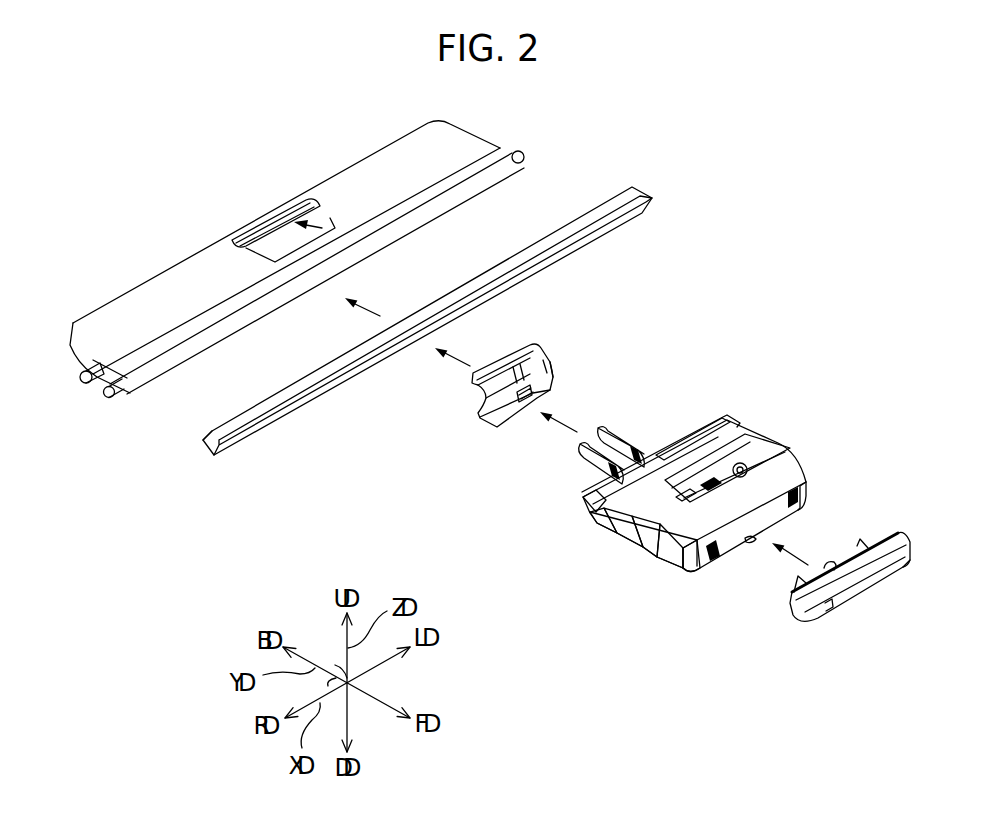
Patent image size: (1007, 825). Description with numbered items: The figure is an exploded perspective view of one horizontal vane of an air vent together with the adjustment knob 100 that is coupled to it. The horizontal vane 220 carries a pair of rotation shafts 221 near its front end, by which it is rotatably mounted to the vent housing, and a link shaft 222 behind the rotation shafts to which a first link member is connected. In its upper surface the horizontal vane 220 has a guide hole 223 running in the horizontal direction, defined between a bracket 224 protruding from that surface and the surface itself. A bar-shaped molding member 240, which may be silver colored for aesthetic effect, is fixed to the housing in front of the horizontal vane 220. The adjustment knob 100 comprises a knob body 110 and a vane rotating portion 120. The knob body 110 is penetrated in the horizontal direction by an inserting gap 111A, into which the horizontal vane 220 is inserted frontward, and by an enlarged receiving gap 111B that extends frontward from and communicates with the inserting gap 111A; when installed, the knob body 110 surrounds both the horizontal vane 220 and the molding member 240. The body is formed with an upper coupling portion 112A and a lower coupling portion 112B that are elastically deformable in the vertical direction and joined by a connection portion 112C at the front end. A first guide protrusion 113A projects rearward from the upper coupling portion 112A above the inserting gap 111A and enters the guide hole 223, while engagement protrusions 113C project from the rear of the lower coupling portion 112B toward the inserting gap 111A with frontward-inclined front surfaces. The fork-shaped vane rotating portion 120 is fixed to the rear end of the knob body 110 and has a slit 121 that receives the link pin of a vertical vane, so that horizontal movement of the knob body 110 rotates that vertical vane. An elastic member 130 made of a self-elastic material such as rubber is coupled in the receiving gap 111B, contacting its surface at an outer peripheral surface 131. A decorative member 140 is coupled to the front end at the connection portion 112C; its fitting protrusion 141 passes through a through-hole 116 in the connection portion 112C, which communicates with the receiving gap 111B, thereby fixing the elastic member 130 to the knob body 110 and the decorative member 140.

The adjustment knob 100 is at (777, 326).
The knob body 110 is at (795, 415).
The inserting gap 111A is at (610, 540).
The receiving gap 111B is at (650, 566).
The upper coupling portion 112A is at (584, 527).
The lower coupling portion 112B is at (642, 558).
The connection portion 112C is at (690, 570).
The first guide protrusion 113A is at (664, 450).
The engagement protrusions 113C is at (588, 514).
The through-hole 116 is at (750, 546).
The vane rotating portion 120 is at (622, 414).
The slit 121 is at (586, 444).
The elastic member 130 is at (555, 345).
The outer peripheral surface 131 is at (505, 355).
The decorative member 140 is at (843, 580).
The fitting protrusion 141 is at (828, 562).
The horizontal vane 220 is at (167, 285).
The rotation shafts 221 is at (530, 155).
The link shaft 222 is at (88, 385).
The guide hole 223 is at (328, 222).
The bracket 224 is at (264, 228).
The molding member 240 is at (243, 452).